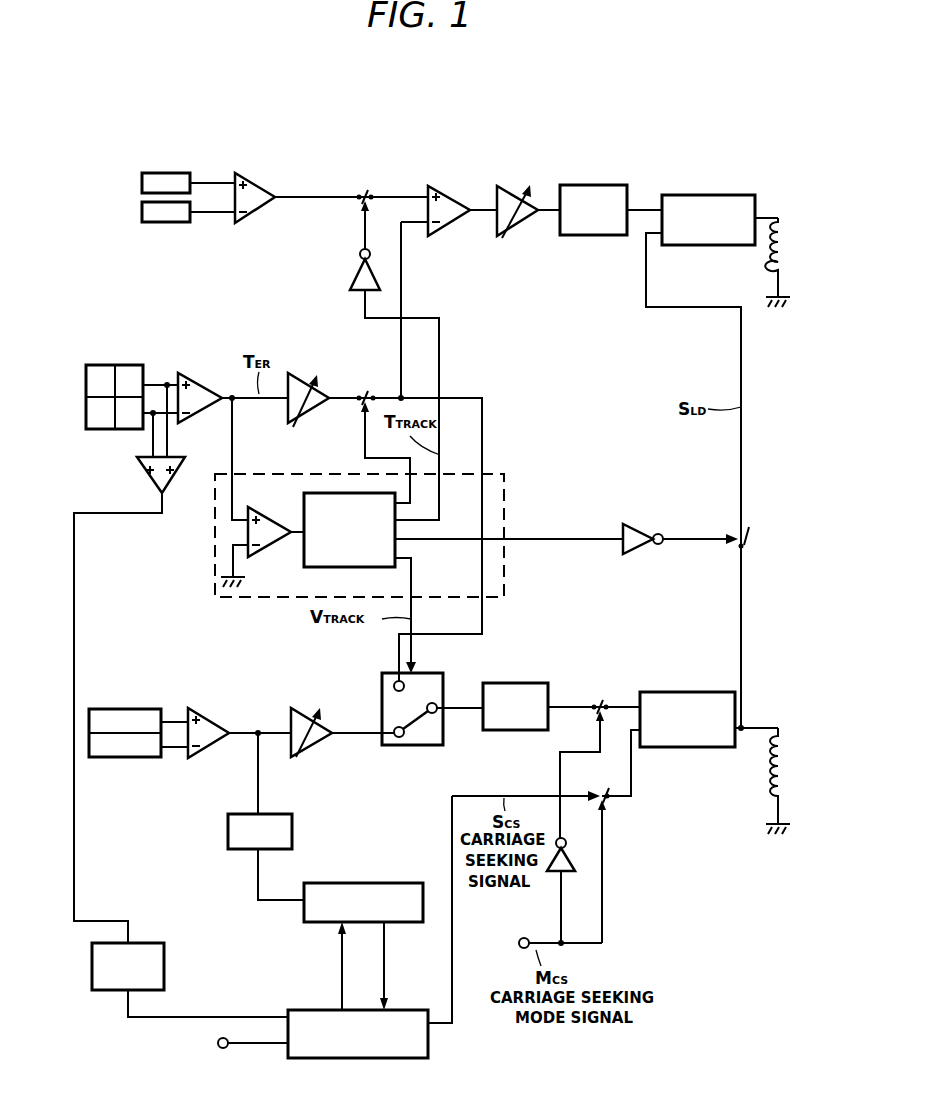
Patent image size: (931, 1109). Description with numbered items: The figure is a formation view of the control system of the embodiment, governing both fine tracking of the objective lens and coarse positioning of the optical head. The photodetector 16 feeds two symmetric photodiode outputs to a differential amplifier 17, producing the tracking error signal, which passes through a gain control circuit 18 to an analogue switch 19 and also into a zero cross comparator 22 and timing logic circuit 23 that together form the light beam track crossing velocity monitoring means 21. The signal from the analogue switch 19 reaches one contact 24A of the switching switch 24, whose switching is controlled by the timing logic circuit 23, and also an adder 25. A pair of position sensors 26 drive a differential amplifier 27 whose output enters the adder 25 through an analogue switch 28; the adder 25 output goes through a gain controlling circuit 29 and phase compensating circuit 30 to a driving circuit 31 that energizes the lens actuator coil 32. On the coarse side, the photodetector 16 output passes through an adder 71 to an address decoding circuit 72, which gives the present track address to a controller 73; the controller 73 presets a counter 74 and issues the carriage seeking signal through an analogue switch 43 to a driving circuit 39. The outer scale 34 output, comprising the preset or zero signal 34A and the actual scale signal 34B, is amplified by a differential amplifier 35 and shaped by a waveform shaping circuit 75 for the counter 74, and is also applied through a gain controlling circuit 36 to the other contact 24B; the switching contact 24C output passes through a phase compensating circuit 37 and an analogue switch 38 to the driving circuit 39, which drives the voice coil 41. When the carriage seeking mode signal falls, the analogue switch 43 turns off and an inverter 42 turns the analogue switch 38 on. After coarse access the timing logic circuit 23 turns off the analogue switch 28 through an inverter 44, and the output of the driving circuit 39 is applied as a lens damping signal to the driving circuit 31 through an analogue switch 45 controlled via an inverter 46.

The photodetector 16 is at (117, 355).
The differential amplifier 17 is at (196, 372).
The gain control circuit 18 is at (308, 376).
The analogue switch 19 is at (363, 393).
The light beam track crossing velocity monitoring means 21 is at (500, 472).
The zero cross comparator 22 is at (246, 524).
The timing logic circuit 23 is at (334, 568).
The switching switch 24 is at (415, 742).
The contact 24A is at (393, 683).
The contact 24B is at (404, 742).
The switching contact 24C is at (446, 735).
The adder 25 is at (450, 228).
The position sensor 26 is at (142, 214).
The differential amplifier 27 is at (258, 178).
The analogue switch 28 is at (367, 192).
The gain controlling circuit 29 is at (512, 188).
The phase compensating circuit 30 is at (597, 185).
The driving circuit 31 is at (700, 194).
The lens actuator coil 32 is at (778, 214).
The outer scale 34 is at (127, 758).
The outer scale signal 34A is at (176, 749).
The outer scale signal 34B is at (176, 720).
The differential amplifier 35 is at (208, 752).
The gain controlling circuit 36 is at (312, 752).
The phase compensating circuit 37 is at (520, 683).
The analogue switch 38 is at (599, 702).
The driving circuit 39 is at (684, 692).
The voice coil 41 is at (766, 764).
The inverter 42 is at (571, 873).
The analogue switch 43 is at (609, 790).
The inverter 44 is at (355, 270).
The analogue switch 45 is at (748, 525).
The inverter 46 is at (636, 523).
The adder 71 is at (145, 478).
The address decoding circuit 72 is at (166, 947).
The controller 73 is at (376, 1059).
The counter 74 is at (372, 883).
The waveform shaping circuit 75 is at (228, 823).